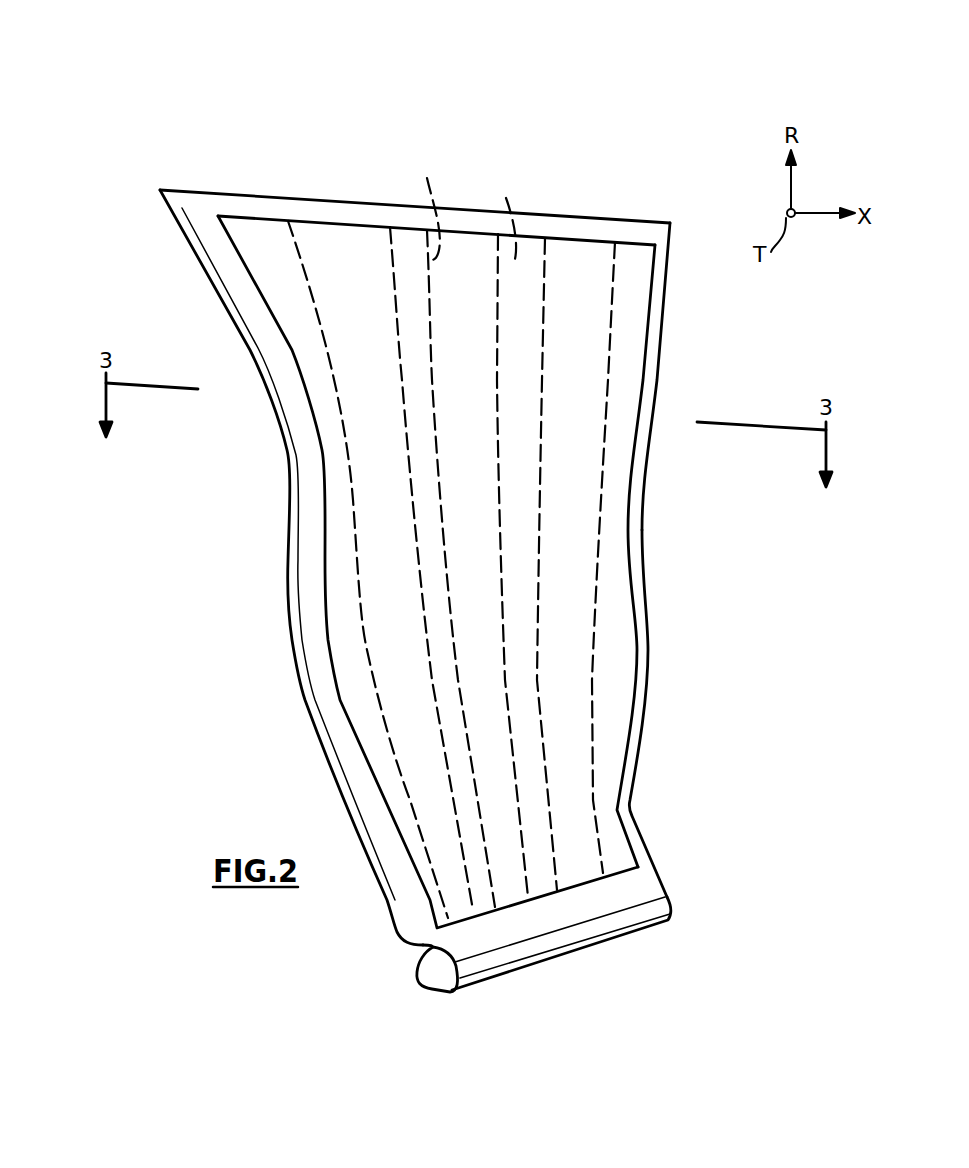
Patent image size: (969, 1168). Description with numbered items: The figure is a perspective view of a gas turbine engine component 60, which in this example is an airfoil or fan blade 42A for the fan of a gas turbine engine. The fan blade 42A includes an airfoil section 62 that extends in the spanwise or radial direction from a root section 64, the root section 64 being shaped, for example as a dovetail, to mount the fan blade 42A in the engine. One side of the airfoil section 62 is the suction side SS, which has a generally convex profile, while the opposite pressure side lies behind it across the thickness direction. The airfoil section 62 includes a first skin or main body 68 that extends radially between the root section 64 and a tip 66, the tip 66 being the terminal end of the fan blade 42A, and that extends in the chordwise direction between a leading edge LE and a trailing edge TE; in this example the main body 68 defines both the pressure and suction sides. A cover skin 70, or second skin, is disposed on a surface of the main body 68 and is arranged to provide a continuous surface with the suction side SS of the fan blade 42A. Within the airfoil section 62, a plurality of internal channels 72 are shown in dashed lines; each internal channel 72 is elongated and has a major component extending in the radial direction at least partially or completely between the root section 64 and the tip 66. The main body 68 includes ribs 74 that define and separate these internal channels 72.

The gas turbine engine component 60 is at (110, 82).
The fan blade 42A is at (228, 182).
The tip 66 is at (332, 200).
The main body 68 is at (248, 300).
The airfoil section 62 is at (664, 405).
The cover skin 70 is at (620, 625).
The root section 64 is at (679, 894).
The internal channel 72 is at (392, 242).
The rib 74 is at (420, 283).
The leading edge LE is at (289, 505).
The trailing edge TE is at (645, 510).
The suction side SS is at (663, 295).